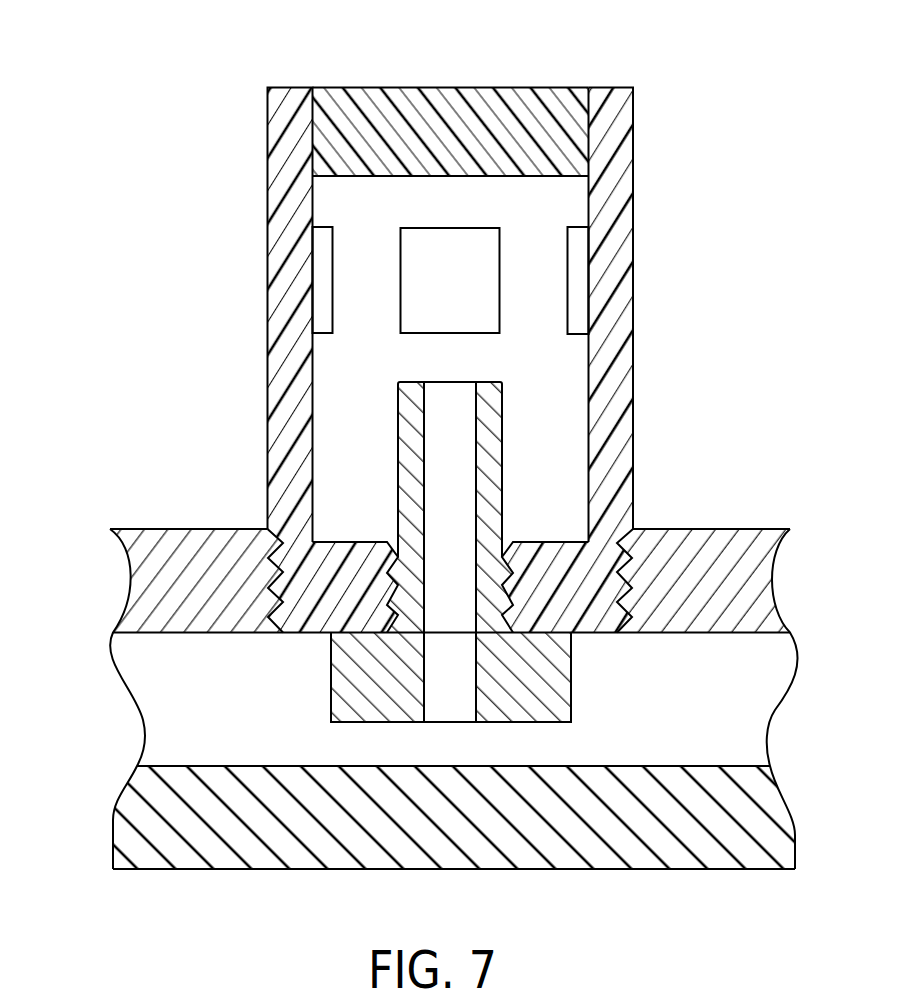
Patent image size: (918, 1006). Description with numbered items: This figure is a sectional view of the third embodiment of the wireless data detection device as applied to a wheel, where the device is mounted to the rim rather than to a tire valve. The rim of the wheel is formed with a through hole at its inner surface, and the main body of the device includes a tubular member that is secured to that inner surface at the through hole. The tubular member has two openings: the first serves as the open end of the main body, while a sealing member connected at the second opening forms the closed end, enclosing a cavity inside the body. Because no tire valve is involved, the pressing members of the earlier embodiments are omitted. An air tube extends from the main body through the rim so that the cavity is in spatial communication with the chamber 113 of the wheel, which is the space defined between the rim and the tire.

The chamber 113 is at (757, 710).